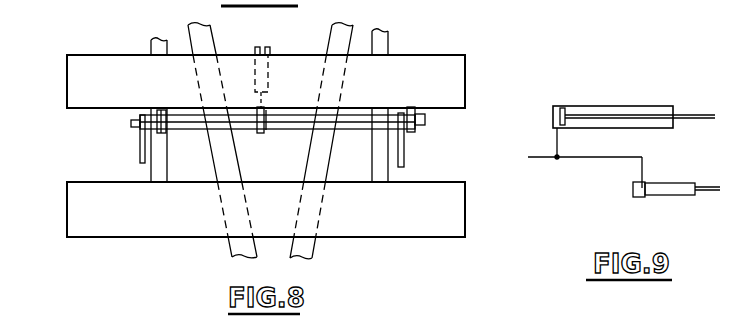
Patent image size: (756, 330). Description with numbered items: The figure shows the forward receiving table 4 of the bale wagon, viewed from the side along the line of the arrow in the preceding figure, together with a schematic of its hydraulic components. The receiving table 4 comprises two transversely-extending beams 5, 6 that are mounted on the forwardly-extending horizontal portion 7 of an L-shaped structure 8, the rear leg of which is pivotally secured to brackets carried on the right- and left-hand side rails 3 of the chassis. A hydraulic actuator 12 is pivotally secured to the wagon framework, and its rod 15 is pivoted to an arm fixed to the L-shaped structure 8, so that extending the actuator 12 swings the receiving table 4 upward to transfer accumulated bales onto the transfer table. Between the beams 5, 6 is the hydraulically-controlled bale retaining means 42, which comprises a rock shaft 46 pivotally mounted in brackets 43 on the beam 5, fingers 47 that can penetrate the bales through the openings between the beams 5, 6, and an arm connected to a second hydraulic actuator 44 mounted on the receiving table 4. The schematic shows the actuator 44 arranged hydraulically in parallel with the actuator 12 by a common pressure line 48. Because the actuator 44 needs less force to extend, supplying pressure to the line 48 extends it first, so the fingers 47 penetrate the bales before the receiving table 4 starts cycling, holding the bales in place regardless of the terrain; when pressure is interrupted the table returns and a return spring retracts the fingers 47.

In FIG. 8, the side rails 3 is at (217, 44).
In FIG. 8, the receiving table 4 is at (439, 237).
In FIG. 8, the beam 5 is at (466, 86).
In FIG. 8, the beam 6 is at (468, 218).
In FIG. 8, the horizontal portion 7 is at (148, 173).
In FIG. 8, the L-shaped structure 8 is at (146, 47).
In FIG. 9, the hydraulic actuator 12 is at (604, 106).
In FIG. 9, the rod 15 is at (692, 113).
In FIG. 8, the bale retaining means 42 is at (135, 143).
In FIG. 8, the brackets 43 is at (140, 118).
In FIG. 8, the hydraulic actuator 44 is at (281, 43).
In FIG. 9, the hydraulic actuator 44 is at (683, 197).
In FIG. 8, the rock shaft 46 is at (242, 131).
In FIG. 8, the fingers 47 is at (145, 151).
In FIG. 9, the pressure line 48 is at (605, 158).